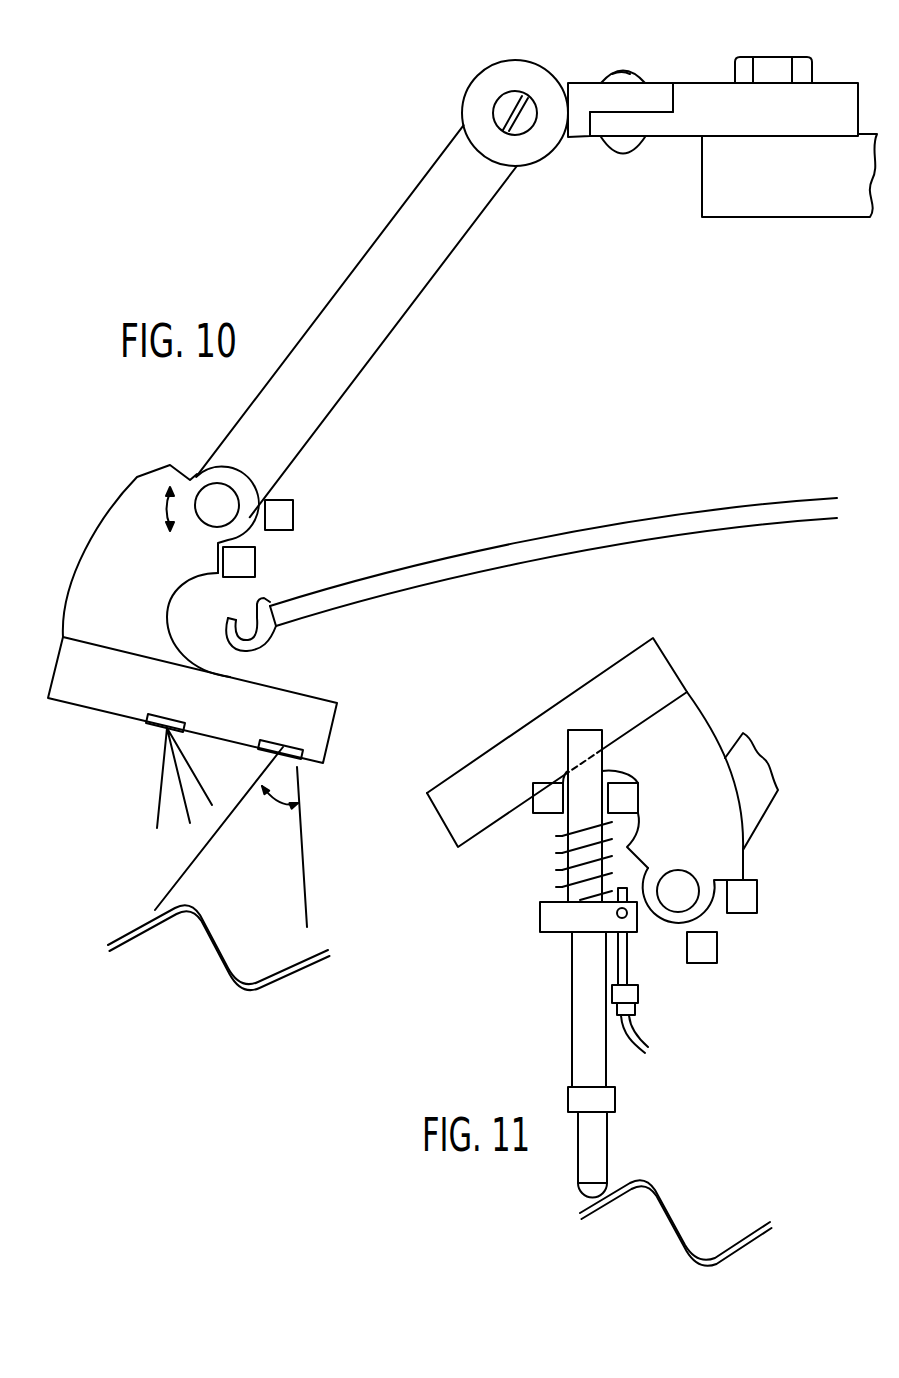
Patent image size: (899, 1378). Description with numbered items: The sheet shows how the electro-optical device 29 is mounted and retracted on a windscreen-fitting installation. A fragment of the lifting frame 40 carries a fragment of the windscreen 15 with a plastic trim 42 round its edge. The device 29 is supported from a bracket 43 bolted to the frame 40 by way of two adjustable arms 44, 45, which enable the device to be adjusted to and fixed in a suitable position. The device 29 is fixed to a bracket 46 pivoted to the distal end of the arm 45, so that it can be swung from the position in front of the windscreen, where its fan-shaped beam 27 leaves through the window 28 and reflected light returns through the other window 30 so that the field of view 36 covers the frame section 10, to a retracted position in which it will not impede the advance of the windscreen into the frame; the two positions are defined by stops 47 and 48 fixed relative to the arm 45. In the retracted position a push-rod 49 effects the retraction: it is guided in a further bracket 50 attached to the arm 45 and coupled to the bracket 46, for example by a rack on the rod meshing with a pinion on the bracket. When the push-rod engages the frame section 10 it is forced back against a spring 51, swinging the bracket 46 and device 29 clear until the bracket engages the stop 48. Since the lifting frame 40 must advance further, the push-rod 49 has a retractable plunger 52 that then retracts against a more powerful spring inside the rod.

In FIG. 10, the frame section 10 is at (313, 957).
In FIG. 11, the frame section 10 is at (675, 1215).
In FIG. 10, the windscreen 15 is at (462, 562).
In FIG. 10, the fan-shaped beam 27 is at (148, 788).
In FIG. 10, the window 28 is at (148, 722).
In FIG. 10, the electro-optical device 29 is at (335, 727).
In FIG. 11, the electro-optical device 29 is at (458, 818).
In FIG. 10, the window 30 is at (313, 757).
In FIG. 10, the field of view 36 is at (231, 837).
In FIG. 10, the lifting frame 40 is at (763, 205).
In FIG. 10, the plastic trim 42 is at (270, 650).
In FIG. 10, the bracket 43 is at (685, 98).
In FIG. 10, the adjustable arm 44 is at (575, 95).
In FIG. 10, the adjustable arm 45 is at (377, 260).
In FIG. 11, the adjustable arm 45 is at (753, 787).
In FIG. 10, the bracket 46 is at (153, 617).
In FIG. 11, the bracket 46 is at (680, 740).
In FIG. 10, the stop 47 is at (247, 573).
In FIG. 11, the stop 47 is at (717, 943).
In FIG. 10, the stop 48 is at (281, 512).
In FIG. 11, the stop 48 is at (757, 880).
In FIG. 11, the push-rod 49 is at (580, 1015).
In FIG. 11, the further bracket 50 is at (552, 802).
In FIG. 11, the spring 51 is at (562, 853).
In FIG. 11, the retractable plunger 52 is at (592, 1148).